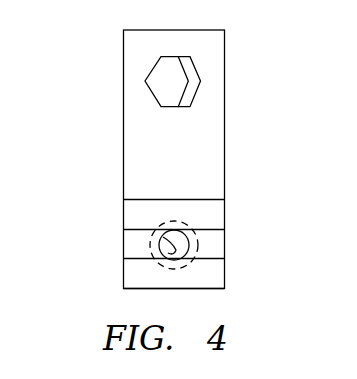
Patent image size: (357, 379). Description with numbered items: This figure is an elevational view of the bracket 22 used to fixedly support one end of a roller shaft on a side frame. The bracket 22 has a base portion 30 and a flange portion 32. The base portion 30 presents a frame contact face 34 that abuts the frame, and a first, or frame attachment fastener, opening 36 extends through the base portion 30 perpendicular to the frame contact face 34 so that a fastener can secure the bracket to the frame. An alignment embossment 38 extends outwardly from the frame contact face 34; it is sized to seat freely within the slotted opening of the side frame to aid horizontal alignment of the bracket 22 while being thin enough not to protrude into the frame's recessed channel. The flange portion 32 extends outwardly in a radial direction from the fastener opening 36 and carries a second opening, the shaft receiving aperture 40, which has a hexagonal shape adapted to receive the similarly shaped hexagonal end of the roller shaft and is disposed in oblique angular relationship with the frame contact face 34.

The bracket 22 is at (160, 157).
The base portion 30 is at (219, 283).
The flange portion 32 is at (213, 160).
The frame contact face 34 is at (215, 215).
The frame attachment fastener opening 36 is at (172, 252).
The alignment embossment 38 is at (132, 243).
The shaft receiving aperture 40 is at (202, 70).